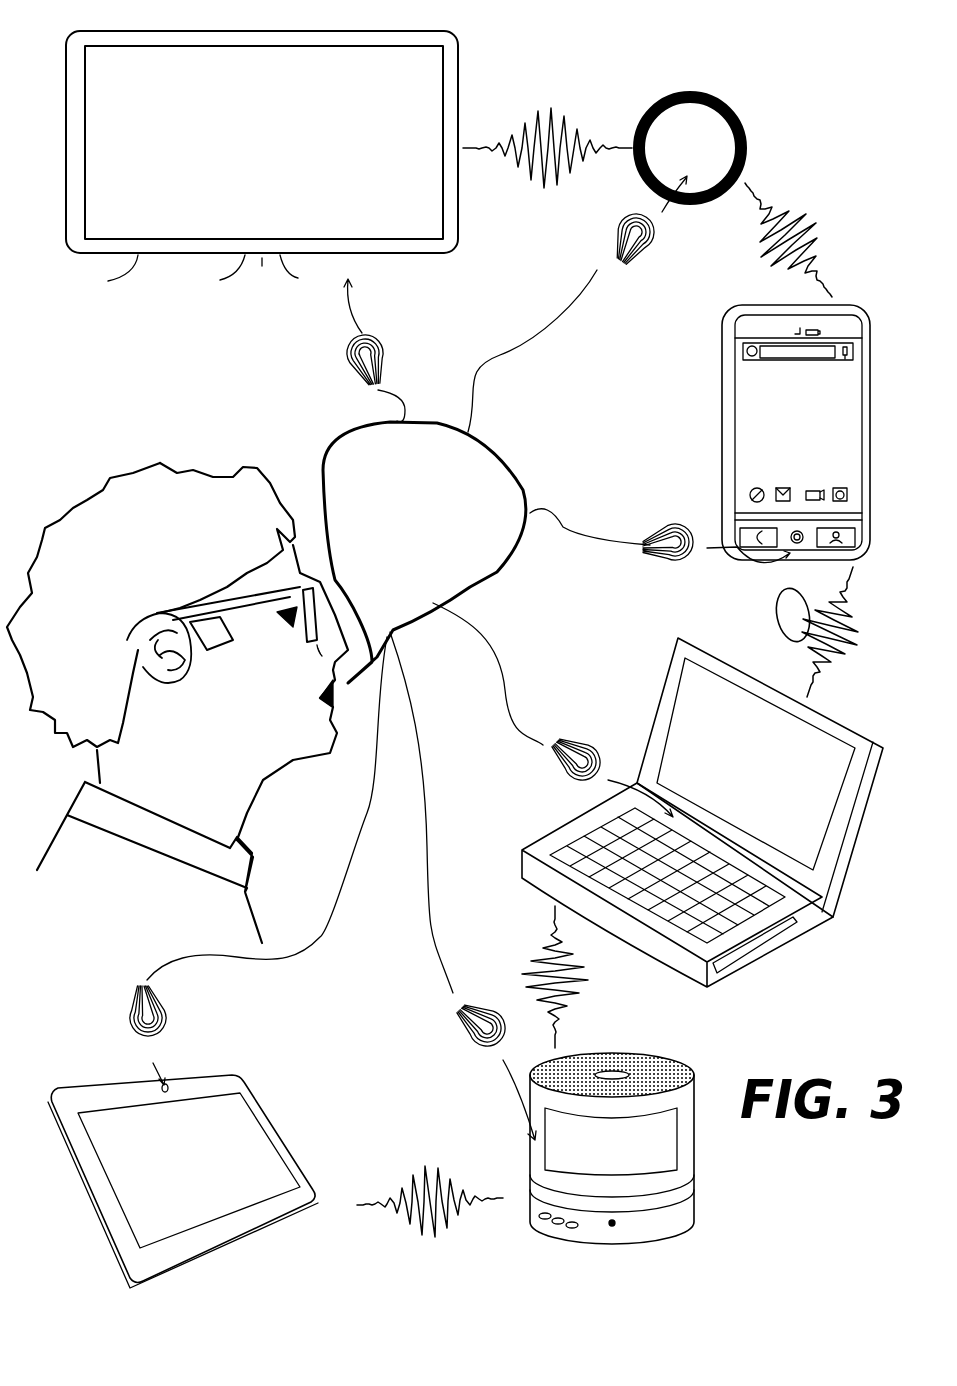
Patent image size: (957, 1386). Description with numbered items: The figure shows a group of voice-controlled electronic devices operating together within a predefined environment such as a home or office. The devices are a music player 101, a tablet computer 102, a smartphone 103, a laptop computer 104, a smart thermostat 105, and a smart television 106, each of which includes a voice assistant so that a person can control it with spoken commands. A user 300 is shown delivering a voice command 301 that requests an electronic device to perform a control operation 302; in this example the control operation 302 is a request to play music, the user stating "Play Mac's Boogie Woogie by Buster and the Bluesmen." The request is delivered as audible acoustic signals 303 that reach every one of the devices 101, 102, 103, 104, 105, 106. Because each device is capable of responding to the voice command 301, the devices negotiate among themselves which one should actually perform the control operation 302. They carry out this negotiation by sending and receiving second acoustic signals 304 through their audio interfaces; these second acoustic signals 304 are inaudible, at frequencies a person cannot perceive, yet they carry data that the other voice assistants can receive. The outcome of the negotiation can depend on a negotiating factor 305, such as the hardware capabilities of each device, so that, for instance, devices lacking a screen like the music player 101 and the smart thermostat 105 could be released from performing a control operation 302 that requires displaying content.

The music player 101 is at (694, 1160).
The tablet computer 102 is at (287, 1142).
The smartphone 103 is at (873, 408).
The laptop computer 104 is at (847, 852).
The smart thermostat 105 is at (748, 150).
The smart television 106 is at (138, 255).
The user 300 is at (293, 760).
The voice command 301 is at (323, 468).
The control operation 302 is at (479, 480).
The audible acoustic signals 303 is at (385, 360).
The second acoustic signals 304 is at (853, 637).
The negotiating factor 305 is at (777, 627).